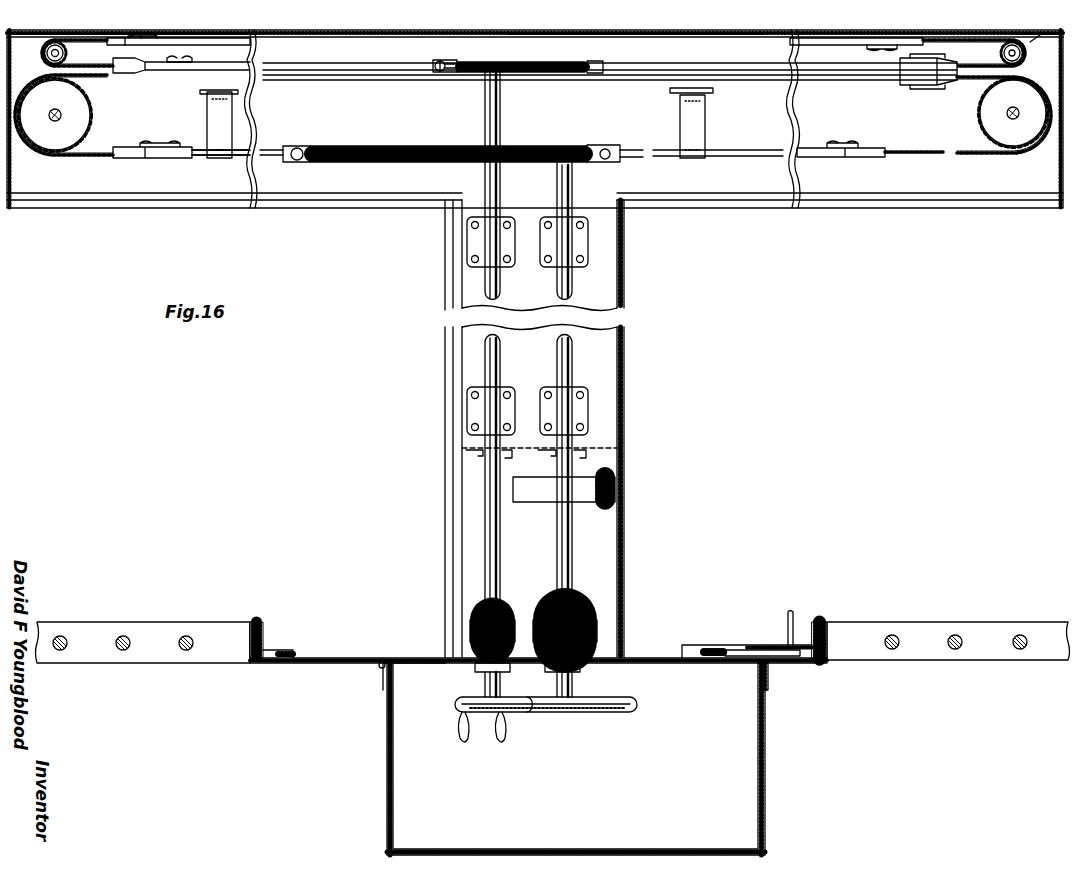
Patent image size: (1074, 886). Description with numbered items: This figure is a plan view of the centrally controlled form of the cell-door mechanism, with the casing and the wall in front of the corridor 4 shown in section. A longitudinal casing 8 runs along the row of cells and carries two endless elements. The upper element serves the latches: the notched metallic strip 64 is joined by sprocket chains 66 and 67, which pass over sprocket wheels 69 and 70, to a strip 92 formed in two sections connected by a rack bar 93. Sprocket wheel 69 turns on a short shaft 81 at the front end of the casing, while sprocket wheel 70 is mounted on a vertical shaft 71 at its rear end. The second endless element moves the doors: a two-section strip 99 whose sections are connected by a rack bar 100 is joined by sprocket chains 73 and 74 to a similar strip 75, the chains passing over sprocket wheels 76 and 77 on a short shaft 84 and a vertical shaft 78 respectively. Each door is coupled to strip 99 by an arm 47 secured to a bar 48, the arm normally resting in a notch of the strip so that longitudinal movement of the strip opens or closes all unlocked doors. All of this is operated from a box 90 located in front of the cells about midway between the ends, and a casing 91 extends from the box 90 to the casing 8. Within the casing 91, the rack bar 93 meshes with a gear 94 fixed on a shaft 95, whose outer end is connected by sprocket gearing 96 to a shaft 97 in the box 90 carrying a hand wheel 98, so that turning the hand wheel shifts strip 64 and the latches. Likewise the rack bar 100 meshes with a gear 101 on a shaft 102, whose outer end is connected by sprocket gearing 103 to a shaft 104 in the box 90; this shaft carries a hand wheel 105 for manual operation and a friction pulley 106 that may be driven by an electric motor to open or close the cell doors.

The corridor 4 is at (553, 621).
The casing 8 is at (400, 200).
The arm 47 is at (207, 124).
The bar 48 is at (200, 92).
The metallic strip 64 is at (628, 34).
The sprocket chain 66 is at (125, 68).
The sprocket chain 67 is at (873, 63).
The sprocket wheel 69 is at (66, 53).
The sprocket wheel 70 is at (1045, 45).
The vertical shaft 71 is at (1005, 53).
The sprocket chain 73 is at (88, 157).
The sprocket chain 74 is at (925, 155).
The strip 75 is at (633, 80).
The sprocket wheel 76 is at (78, 100).
The sprocket wheel 77 is at (988, 99).
The vertical shaft 78 is at (1008, 113).
The short shaft 81 is at (51, 53).
The short shaft 84 is at (61, 116).
The box 90 is at (765, 752).
The casing 91 is at (624, 540).
The strip 92 is at (379, 63).
The rack bar 93 is at (555, 56).
The gear 94 is at (463, 58).
The shaft 95 is at (488, 352).
The sprocket gearing 96 is at (470, 628).
The shaft 97 is at (485, 684).
The hand wheel 98 is at (481, 716).
The strip 99 is at (240, 158).
The rack bar 100 is at (370, 136).
The gear 101 is at (565, 146).
The shaft 102 is at (566, 353).
The sprocket gearing 103 is at (546, 620).
The shaft 104 is at (572, 685).
The hand wheel 105 is at (606, 712).
The friction pulley 106 is at (620, 491).